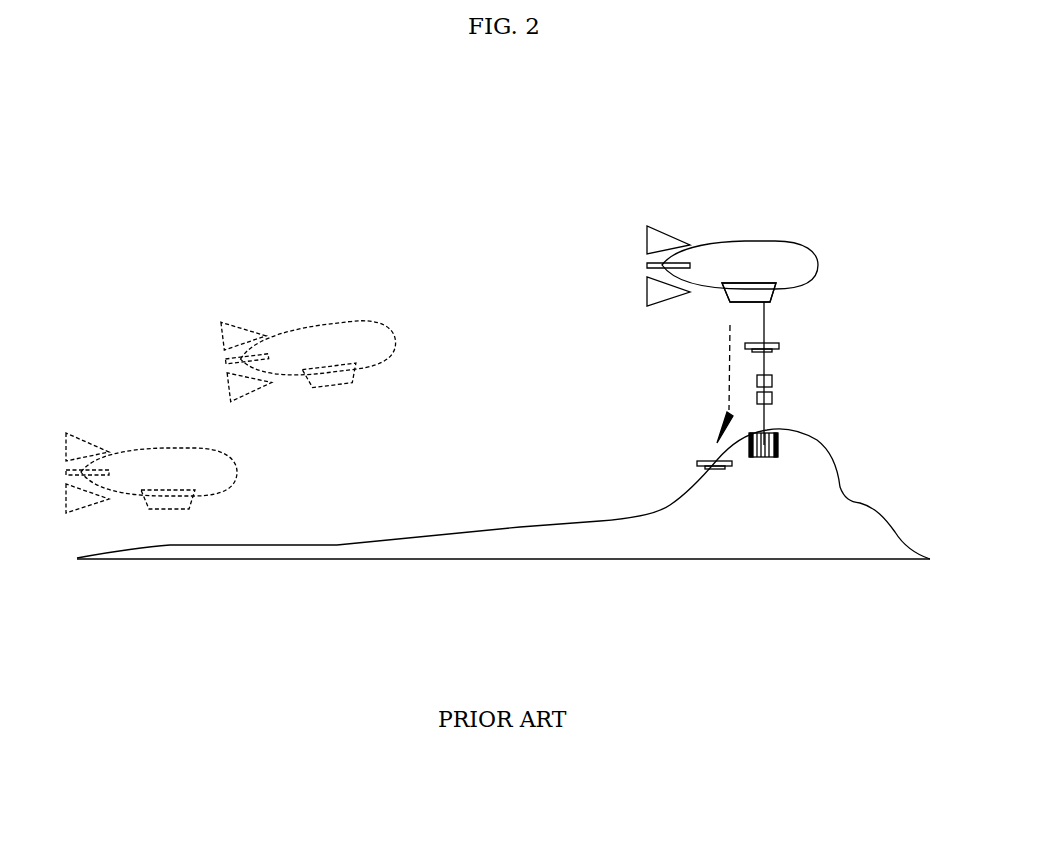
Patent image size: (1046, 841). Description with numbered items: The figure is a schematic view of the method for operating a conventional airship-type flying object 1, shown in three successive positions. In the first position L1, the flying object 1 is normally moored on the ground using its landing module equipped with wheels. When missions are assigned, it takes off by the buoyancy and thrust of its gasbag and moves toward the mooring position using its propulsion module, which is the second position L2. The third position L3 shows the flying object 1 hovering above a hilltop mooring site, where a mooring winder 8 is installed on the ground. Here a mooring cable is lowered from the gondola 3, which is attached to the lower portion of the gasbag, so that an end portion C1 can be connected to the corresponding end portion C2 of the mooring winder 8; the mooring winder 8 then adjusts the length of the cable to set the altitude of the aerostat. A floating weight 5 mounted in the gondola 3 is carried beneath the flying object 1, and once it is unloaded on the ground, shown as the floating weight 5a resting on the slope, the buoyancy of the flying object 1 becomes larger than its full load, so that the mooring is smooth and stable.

The flying object 1 is at (678, 208).
The wheeled landing mode L1 is at (151, 456).
The transit mode L2 is at (310, 341).
The mooring mode L3 is at (738, 316).
The gondola 3 is at (776, 297).
The floating weight 5 is at (780, 345).
The end portion C1 is at (773, 379).
The end portion C2 is at (773, 397).
The unloaded floating weight 5a is at (696, 462).
The mooring winder 8 is at (786, 444).